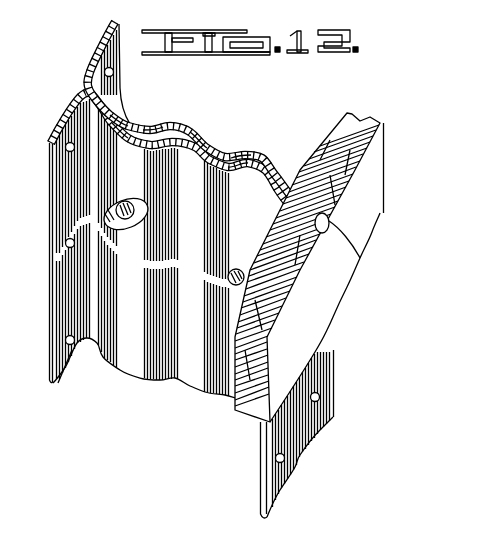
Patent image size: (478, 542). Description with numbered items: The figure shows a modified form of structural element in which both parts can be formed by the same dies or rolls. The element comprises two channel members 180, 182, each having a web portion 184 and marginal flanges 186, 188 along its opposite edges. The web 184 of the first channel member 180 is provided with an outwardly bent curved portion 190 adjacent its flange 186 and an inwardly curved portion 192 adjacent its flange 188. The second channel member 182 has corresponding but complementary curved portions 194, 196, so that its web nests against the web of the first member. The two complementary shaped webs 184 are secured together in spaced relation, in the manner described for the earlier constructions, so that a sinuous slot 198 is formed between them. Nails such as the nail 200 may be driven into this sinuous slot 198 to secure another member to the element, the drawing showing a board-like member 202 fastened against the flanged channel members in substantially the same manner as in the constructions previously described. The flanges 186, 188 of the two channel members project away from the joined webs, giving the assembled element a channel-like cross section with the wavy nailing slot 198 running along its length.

The channel member 180 is at (200, 137).
The channel member 182 is at (192, 166).
The web portion 184 is at (207, 137).
The marginal flange 186 is at (100, 44).
The marginal flange 188 is at (334, 147).
The outwardly bent curved portion 190 is at (124, 121).
The inwardly curved portion 192 is at (243, 147).
The complementary curved portion 194 is at (125, 150).
The complementary curved portion 196 is at (238, 170).
The sinuous slot 198 is at (152, 131).
The nail 200 is at (360, 259).
The right corrugated panel 202 is at (381, 166).